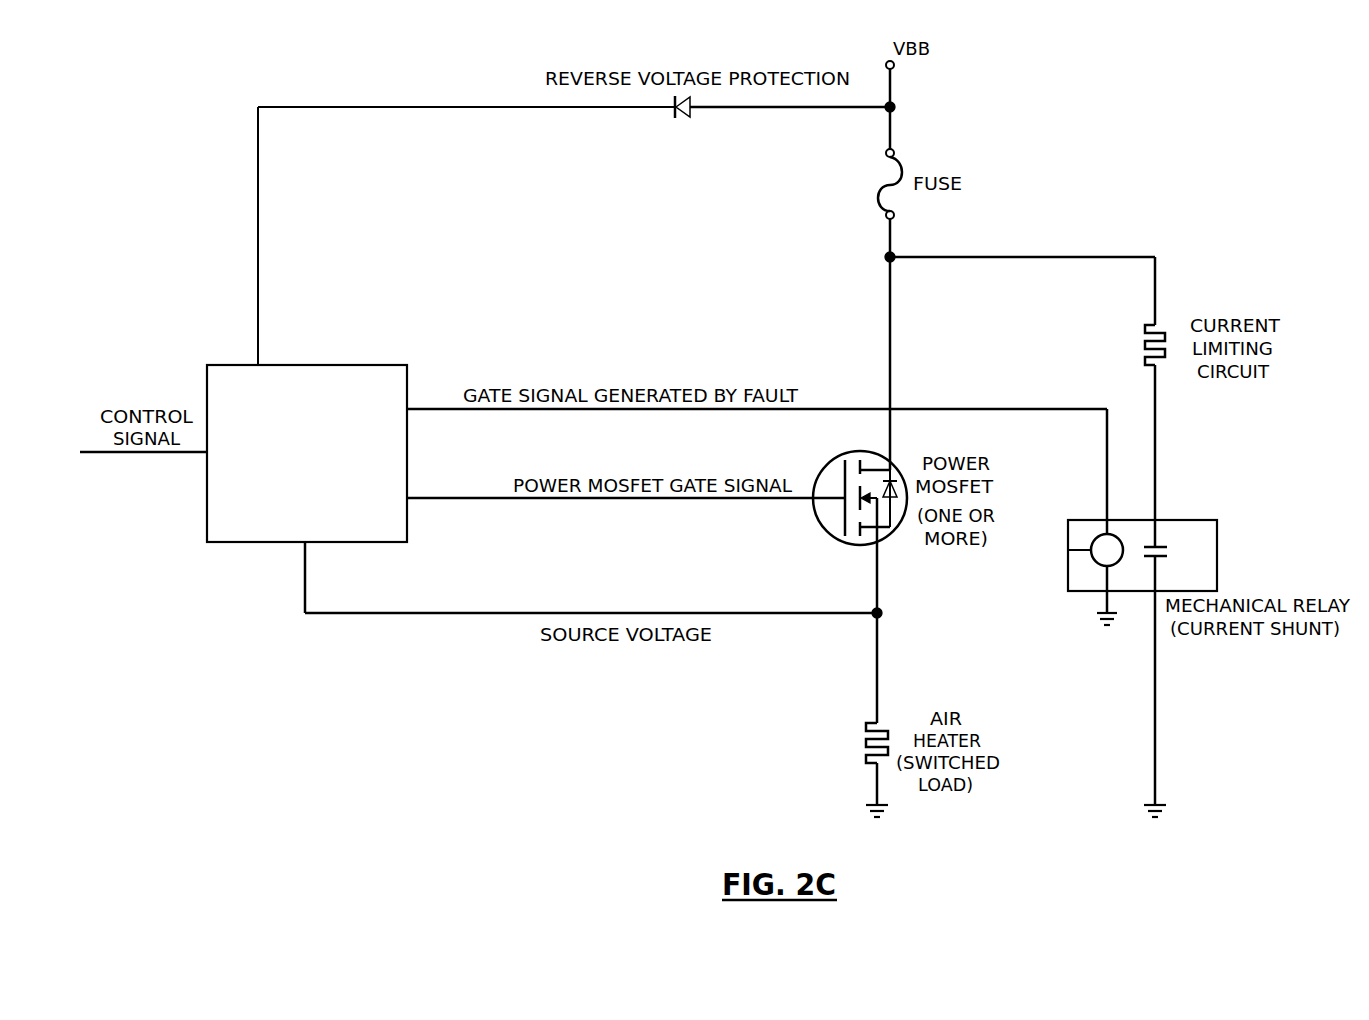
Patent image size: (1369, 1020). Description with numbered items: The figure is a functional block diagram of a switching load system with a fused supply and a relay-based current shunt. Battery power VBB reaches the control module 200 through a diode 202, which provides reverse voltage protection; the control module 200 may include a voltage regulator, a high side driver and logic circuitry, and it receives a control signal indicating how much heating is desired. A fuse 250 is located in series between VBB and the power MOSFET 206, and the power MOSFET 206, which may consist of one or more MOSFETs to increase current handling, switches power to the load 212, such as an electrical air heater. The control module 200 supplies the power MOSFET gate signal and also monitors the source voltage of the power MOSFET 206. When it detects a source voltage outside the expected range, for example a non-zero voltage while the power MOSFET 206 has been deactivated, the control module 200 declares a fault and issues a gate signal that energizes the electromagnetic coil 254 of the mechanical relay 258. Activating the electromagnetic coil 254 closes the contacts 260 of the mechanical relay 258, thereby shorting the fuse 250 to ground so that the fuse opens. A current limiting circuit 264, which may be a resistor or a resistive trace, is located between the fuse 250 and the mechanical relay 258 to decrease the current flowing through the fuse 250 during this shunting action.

The control module 200 is at (207, 520).
The diode 202 is at (683, 118).
The power MOSFET 206 is at (815, 518).
The load 212 is at (866, 725).
The fuse 250 is at (880, 195).
The electromagnetic coil 254 is at (1068, 550).
The mechanical relay 258 is at (1217, 555).
The contacts 260 is at (1160, 545).
The current limiting circuit 264 is at (1145, 325).